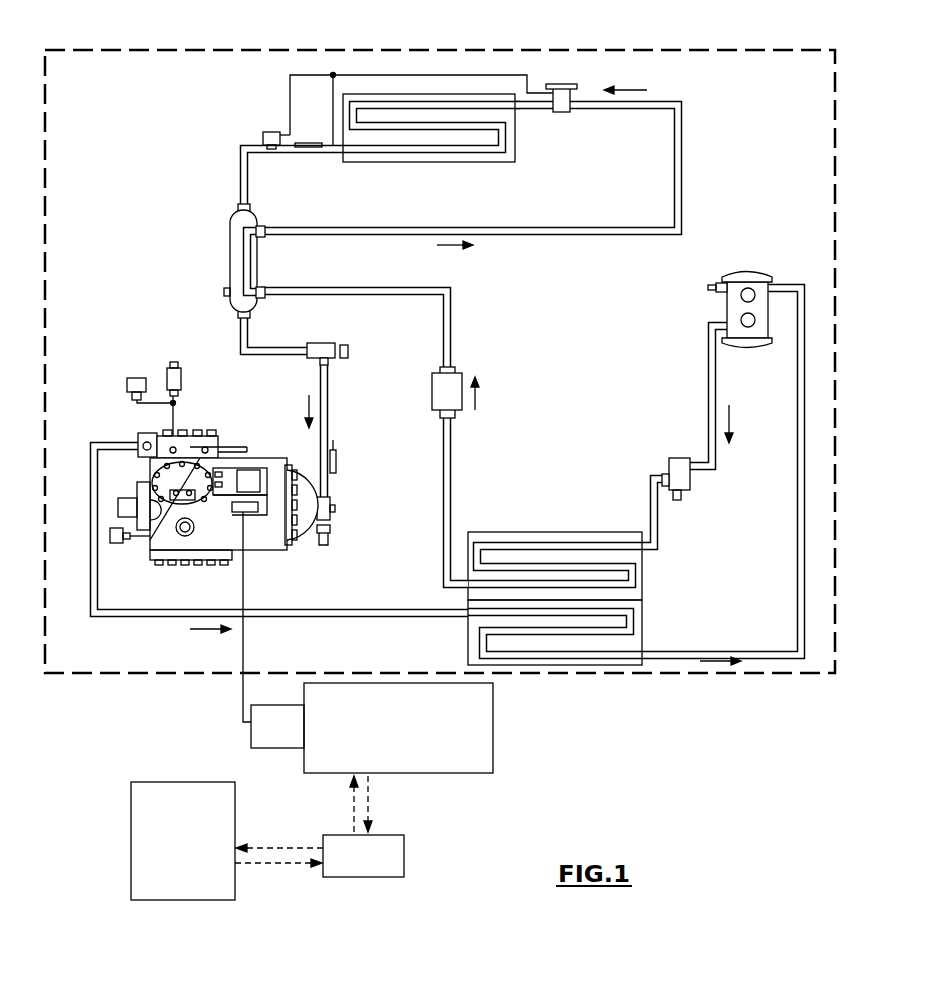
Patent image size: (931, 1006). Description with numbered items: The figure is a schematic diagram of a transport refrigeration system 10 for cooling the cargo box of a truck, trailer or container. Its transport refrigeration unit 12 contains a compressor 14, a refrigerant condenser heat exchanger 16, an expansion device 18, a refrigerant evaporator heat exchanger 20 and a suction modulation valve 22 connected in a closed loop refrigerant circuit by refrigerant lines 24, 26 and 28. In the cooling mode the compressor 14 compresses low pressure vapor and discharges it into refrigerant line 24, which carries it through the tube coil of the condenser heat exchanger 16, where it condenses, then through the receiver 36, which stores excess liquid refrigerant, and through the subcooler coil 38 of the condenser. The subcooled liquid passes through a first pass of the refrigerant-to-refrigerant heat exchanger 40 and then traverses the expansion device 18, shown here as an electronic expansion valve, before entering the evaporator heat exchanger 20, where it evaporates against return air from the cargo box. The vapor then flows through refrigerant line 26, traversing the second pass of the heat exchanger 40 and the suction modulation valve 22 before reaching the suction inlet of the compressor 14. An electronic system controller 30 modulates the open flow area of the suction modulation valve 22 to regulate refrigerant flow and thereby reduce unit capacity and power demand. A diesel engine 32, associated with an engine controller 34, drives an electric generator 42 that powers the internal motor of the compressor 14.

The transport refrigeration system 10 is at (668, 727).
The transport refrigeration unit 12 is at (150, 48).
The compressor 14 is at (287, 548).
The refrigerant condenser heat exchanger 16 is at (642, 620).
The expansion device 18 is at (577, 95).
The refrigerant evaporator heat exchanger 20 is at (516, 143).
The suction modulation valve 22 is at (312, 343).
The refrigerant line 24 is at (393, 610).
The refrigerant line 26 is at (453, 338).
The refrigerant line 28 is at (240, 172).
The electronic system controller 30 is at (178, 900).
The diesel engine 32 is at (437, 773).
The engine controller 34 is at (405, 852).
The receiver 36 is at (748, 350).
The subcooler coil 38 is at (512, 540).
The refrigerant-to-refrigerant heat exchanger 40 is at (255, 264).
The electric generator 42 is at (266, 748).